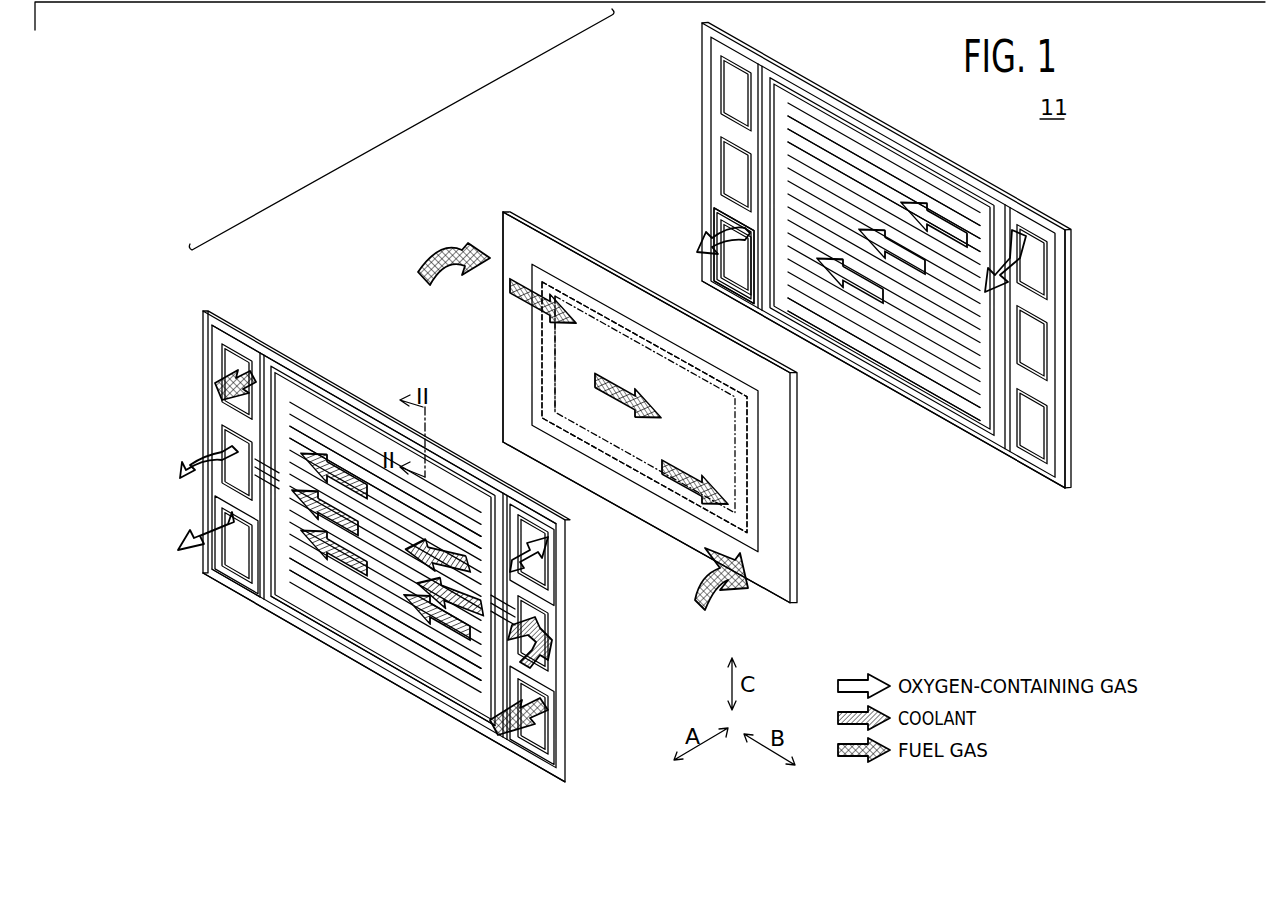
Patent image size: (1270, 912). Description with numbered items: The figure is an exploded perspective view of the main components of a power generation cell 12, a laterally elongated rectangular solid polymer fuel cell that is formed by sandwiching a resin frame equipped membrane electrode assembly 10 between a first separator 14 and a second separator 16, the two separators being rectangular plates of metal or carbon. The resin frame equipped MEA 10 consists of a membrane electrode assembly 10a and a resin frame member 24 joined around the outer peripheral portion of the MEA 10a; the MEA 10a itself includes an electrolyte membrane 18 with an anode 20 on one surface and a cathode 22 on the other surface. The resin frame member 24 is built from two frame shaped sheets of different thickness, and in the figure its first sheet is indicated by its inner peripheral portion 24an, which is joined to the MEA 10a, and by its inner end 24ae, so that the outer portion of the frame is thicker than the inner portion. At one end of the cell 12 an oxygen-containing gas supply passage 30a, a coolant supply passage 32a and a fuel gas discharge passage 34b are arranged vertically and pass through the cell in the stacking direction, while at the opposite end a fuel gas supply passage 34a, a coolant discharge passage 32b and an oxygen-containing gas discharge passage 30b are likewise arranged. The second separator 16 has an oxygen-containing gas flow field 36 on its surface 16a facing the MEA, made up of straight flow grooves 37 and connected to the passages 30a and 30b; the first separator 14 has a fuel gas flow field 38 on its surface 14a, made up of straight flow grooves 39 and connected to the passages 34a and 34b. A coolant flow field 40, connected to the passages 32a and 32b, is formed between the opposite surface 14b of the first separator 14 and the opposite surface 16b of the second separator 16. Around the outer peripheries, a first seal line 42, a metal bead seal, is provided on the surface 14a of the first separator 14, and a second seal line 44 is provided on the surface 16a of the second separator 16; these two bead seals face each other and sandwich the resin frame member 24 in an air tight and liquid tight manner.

The resin frame equipped membrane electrode assembly 10 is at (502, 197).
The membrane electrode assembly 10a is at (625, 479).
The power generation cell 12 is at (406, 130).
The first separator 14 is at (215, 295).
The surface of the first separator 14a is at (214, 580).
The surface of the first separator 14b is at (240, 600).
The second separator 16 is at (692, 44).
The surface of the second separator 16a is at (1030, 455).
The surface of the second separator 16b is at (1050, 480).
The electrolyte membrane 18 is at (712, 462).
The anode 20 is at (524, 404).
The cathode 22 is at (752, 494).
The resin frame member 24 is at (560, 218).
The inner peripheral portion of the first frame shaped sheet 24an is at (610, 325).
The inner end of the first frame shaped sheet 24ae is at (565, 378).
The oxygen-containing gas supply passage 30a is at (540, 576).
The oxygen-containing gas discharge passage 30b is at (232, 518).
The coolant supply passage 32a is at (540, 618).
The coolant discharge passage 32b is at (225, 432).
The fuel gas supply passage 34a is at (226, 372).
The fuel gas discharge passage 34b is at (540, 704).
The oxygen-containing gas flow field 36 is at (850, 160).
The flow grooves 37 is at (905, 345).
The fuel gas flow field 38 is at (342, 430).
The flow grooves 39 is at (398, 632).
The coolant flow field 40 is at (325, 592).
The first seal line 42 is at (300, 368).
The second seal line 44 is at (712, 192).